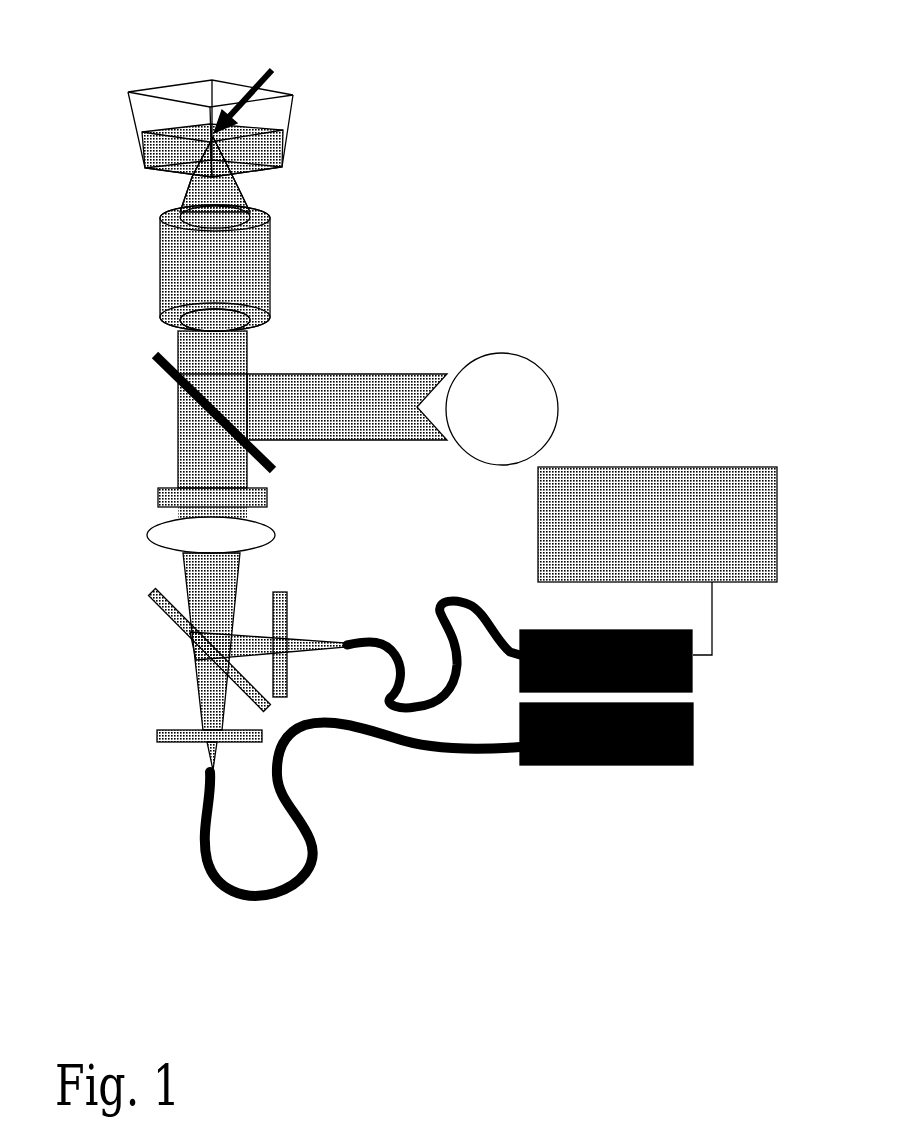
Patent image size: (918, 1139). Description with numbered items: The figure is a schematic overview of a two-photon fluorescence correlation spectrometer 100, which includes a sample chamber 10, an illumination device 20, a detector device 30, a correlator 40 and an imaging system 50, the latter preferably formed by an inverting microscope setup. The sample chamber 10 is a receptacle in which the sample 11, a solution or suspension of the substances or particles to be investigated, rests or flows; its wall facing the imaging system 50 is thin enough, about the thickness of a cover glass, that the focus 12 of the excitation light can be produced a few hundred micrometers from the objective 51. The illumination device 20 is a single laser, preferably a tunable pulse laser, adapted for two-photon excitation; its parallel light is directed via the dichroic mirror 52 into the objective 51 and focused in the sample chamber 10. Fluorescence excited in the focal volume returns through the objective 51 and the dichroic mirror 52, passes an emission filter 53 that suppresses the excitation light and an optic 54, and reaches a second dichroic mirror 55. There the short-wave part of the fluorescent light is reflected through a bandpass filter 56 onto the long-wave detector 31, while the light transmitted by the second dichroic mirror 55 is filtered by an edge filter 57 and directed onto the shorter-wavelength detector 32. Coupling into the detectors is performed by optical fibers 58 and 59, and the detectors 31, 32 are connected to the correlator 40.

The sample chamber 10 is at (143, 71).
The sample 11 is at (283, 145).
The focus 12 is at (268, 84).
The illumination device 20 is at (525, 433).
The detector device 30 is at (787, 719).
The long-wave detector 31 is at (606, 638).
The shorter-wavelength detector 32 is at (606, 756).
The correlator 40 is at (752, 572).
The imaging system 50 is at (114, 562).
The objective 51 is at (270, 273).
The dichroic mirror 52 is at (172, 380).
The emission filter 53 is at (158, 490).
The optic 54 is at (267, 500).
The second dichroic mirror 55 is at (188, 637).
The bandpass filter 56 is at (288, 610).
The edge filter 57 is at (170, 740).
The optical fiber 58 is at (440, 607).
The optical fiber 59 is at (420, 752).
The spectrometer 100 is at (460, 498).